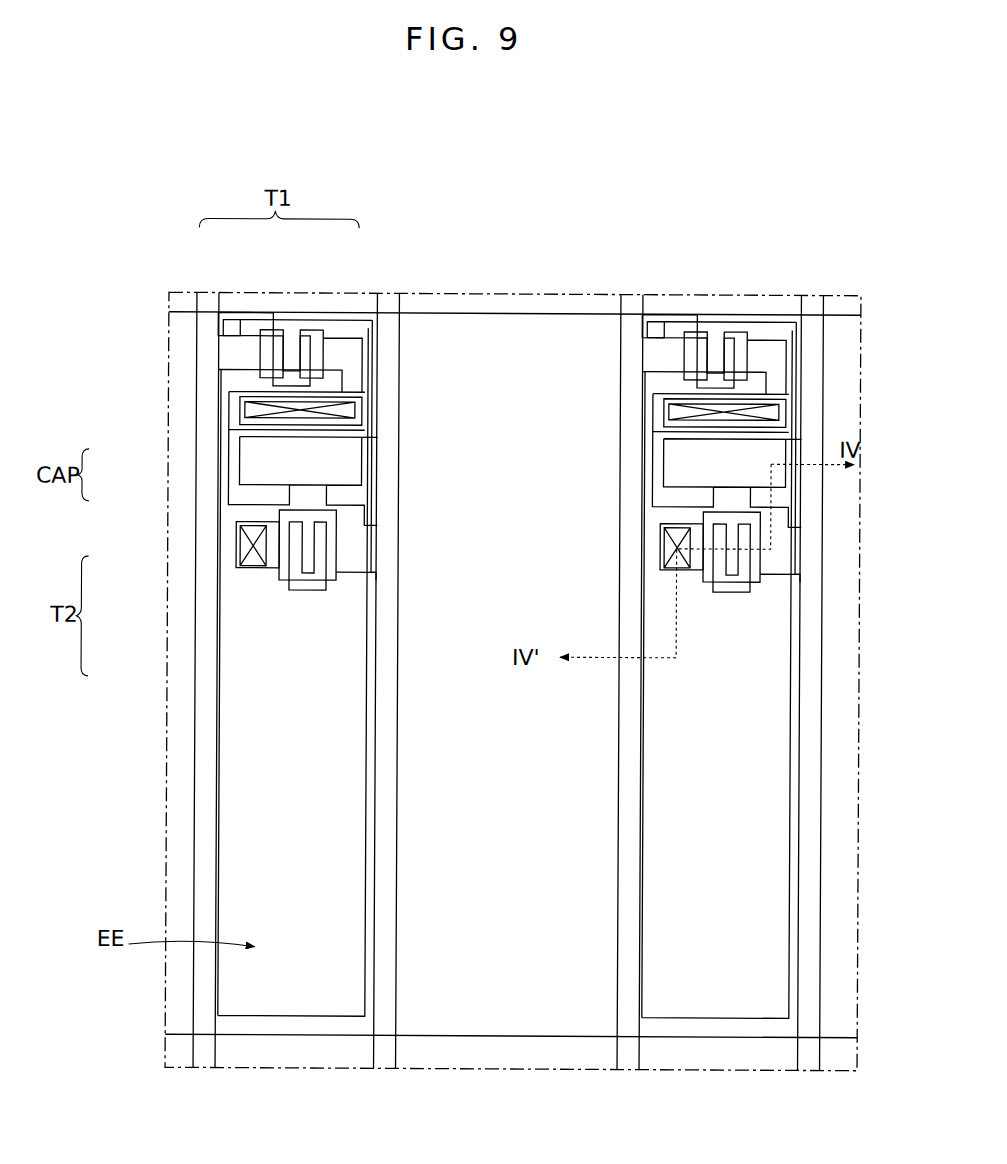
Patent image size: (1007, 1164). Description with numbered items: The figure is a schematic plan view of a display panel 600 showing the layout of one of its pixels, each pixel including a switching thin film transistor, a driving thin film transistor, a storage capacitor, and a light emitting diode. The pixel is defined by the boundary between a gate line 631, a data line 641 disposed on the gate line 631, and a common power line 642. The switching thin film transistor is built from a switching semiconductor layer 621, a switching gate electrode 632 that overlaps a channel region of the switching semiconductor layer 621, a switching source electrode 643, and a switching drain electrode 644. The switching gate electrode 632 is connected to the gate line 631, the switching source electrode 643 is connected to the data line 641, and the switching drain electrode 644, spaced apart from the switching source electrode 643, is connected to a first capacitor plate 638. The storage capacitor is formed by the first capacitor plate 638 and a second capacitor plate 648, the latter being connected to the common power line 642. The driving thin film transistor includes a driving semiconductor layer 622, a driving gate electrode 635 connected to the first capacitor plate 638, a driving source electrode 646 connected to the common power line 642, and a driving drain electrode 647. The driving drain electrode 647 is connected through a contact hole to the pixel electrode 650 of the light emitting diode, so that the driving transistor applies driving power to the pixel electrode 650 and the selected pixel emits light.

The display panel 600 is at (762, 205).
The gate line 631 is at (516, 306).
The data line 641 is at (206, 386).
The common power line 642 is at (386, 322).
The switching source electrode 643 is at (238, 321).
The switching gate electrode 632 is at (252, 323).
The switching semiconductor layer 621 is at (297, 331).
The switching drain electrode 644 is at (338, 338).
The second capacitor plate 648 is at (258, 483).
The first capacitor plate 638 is at (231, 491).
The driving drain electrode 647 is at (252, 567).
The driving semiconductor layer 622 is at (283, 584).
The driving gate electrode 635 is at (307, 593).
The driving source electrode 646 is at (350, 577).
The pixel electrode 650 is at (216, 881).